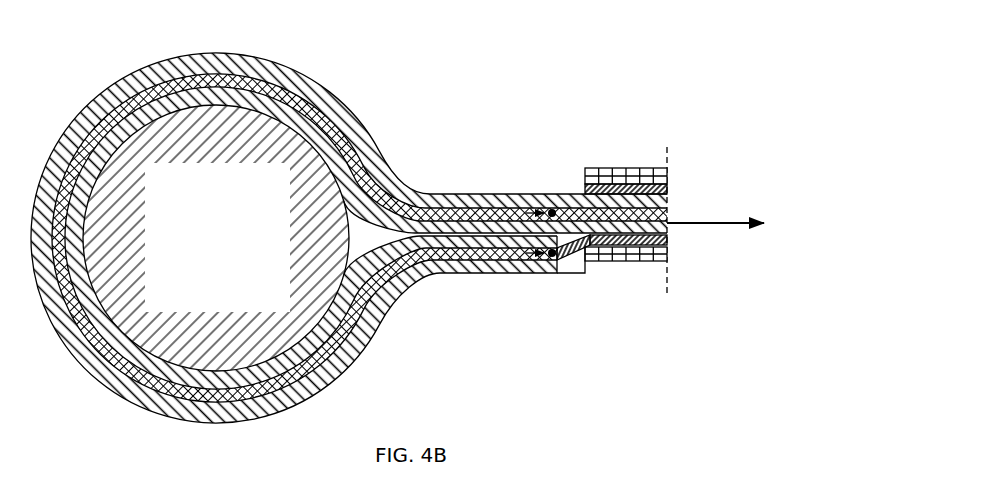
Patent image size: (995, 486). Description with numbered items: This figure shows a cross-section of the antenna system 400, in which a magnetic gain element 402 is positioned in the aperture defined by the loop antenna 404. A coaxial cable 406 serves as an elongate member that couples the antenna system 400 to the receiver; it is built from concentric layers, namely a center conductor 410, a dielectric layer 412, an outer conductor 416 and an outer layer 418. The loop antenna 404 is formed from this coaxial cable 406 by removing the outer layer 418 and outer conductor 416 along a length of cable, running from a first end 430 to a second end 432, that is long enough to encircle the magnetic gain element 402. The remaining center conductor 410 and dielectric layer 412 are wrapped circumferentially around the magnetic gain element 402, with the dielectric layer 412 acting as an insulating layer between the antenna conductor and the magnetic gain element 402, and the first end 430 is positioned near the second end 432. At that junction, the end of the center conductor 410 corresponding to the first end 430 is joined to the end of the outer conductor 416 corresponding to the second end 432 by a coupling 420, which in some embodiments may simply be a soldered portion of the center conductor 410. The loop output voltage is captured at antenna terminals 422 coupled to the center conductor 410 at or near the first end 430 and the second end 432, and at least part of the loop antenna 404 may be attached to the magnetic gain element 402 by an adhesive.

The antenna system 400 is at (444, 229).
The magnetic gain element 402 is at (199, 273).
The loop antenna 404 is at (347, 63).
The coaxial cable 406 is at (605, 212).
The center conductor 410 is at (407, 206).
The dielectric layer 412 is at (364, 282).
The outer conductor 416 is at (596, 240).
The outer layer 418 is at (642, 246).
The coupling 420 is at (569, 253).
The antenna terminals 422 is at (537, 250).
The first end 430 is at (564, 270).
The second end 432 is at (574, 264).